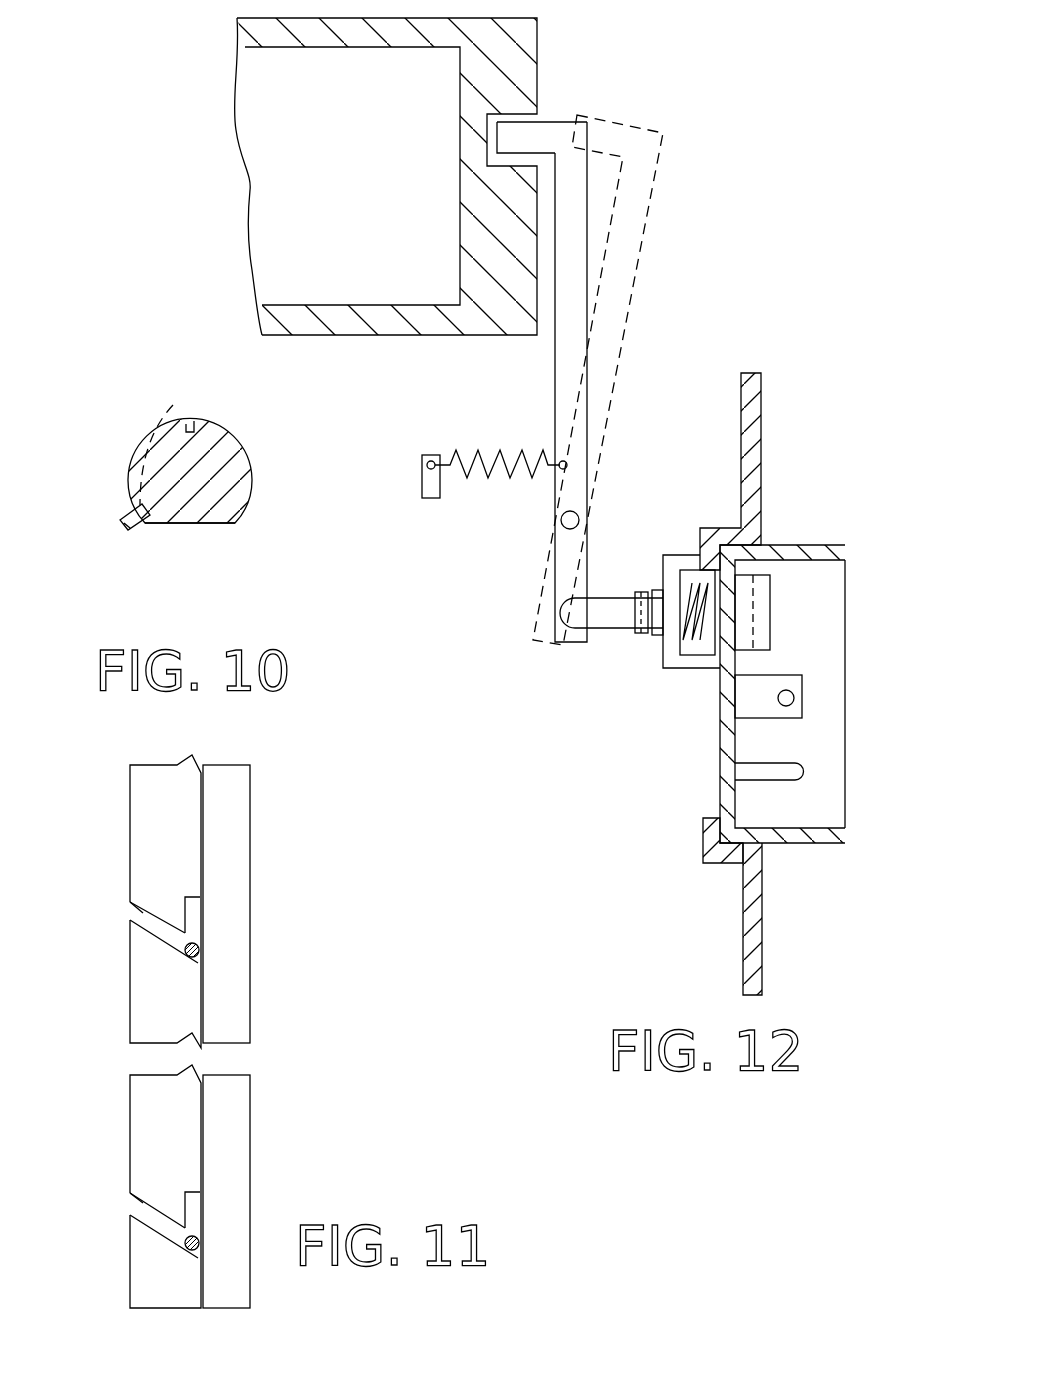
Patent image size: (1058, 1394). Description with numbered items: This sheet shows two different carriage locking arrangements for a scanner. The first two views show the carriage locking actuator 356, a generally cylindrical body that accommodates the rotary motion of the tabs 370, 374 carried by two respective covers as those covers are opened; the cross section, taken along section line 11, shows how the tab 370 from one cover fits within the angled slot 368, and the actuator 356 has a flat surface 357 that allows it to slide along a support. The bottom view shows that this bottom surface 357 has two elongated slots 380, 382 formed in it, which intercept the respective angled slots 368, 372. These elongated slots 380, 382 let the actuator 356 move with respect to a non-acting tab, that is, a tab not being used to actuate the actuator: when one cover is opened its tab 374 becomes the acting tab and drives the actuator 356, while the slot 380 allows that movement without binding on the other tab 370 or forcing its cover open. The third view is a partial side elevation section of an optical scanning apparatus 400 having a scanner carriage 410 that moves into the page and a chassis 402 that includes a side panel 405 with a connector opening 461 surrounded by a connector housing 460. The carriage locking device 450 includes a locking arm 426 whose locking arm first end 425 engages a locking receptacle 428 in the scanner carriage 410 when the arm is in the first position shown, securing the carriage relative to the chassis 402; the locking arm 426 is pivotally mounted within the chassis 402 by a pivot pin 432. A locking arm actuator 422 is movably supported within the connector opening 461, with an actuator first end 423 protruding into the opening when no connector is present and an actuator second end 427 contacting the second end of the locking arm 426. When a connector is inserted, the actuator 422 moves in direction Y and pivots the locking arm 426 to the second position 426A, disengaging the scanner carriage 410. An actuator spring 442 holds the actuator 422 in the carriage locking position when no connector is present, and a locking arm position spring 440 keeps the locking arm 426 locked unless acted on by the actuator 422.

In FIG. 12, the optical scanning apparatus 400 is at (733, 41).
In FIG. 12, the chassis 402 is at (755, 443).
In FIG. 12, the side panel 405 is at (763, 900).
In FIG. 12, the scanner carriage 410 is at (250, 190).
In FIG. 12, the locking arm actuator 422 is at (770, 637).
In FIG. 12, the actuator first end 423 is at (770, 590).
In FIG. 12, the locking arm first end 425 is at (503, 132).
In FIG. 12, the locking arm 426 is at (556, 360).
In FIG. 12, the locking arm second position 426A is at (633, 228).
In FIG. 12, the actuator second end 427 is at (597, 604).
In FIG. 12, the locking receptacle 428 is at (530, 117).
In FIG. 12, the pivot pin 432 is at (561, 521).
In FIG. 12, the locking arm position spring 440 is at (480, 455).
In FIG. 12, the actuator spring 442 is at (697, 657).
In FIG. 12, the carriage locking device 450 is at (568, 830).
In FIG. 12, the connector housing 460 is at (818, 548).
In FIG. 12, the connector opening 461 is at (832, 768).
In FIG. 10, the actuator 356 is at (233, 456).
In FIG. 11, the actuator 356 is at (145, 812).
In FIG. 10, the flat surface 357 is at (180, 525).
In FIG. 11, the flat surface 357 is at (240, 818).
In FIG. 10, the angled slot 368 is at (177, 428).
In FIG. 11, the angled slot 368 is at (133, 912).
In FIG. 10, the tab 370 is at (120, 517).
In FIG. 11, the tab 370 is at (186, 956).
In FIG. 11, the angled slot 372 is at (133, 1205).
In FIG. 11, the tab 374 is at (186, 1250).
In FIG. 11, the elongated slot 380 is at (193, 905).
In FIG. 11, the elongated slot 382 is at (193, 1200).
In FIG. 10, the section line 11 is at (120, 400).